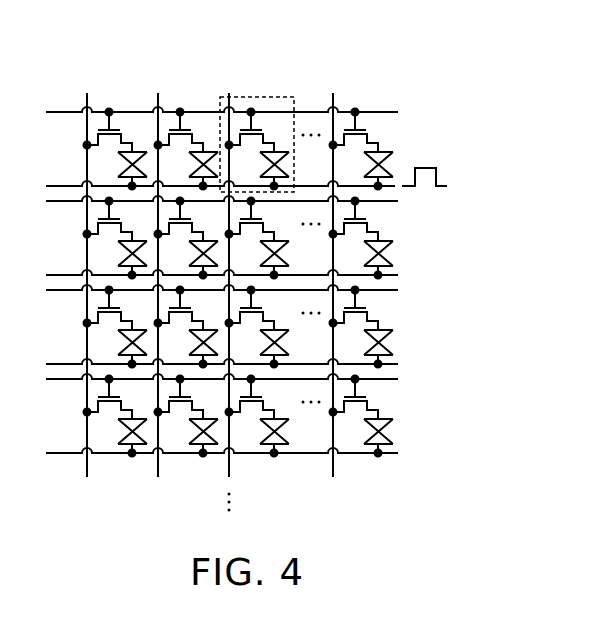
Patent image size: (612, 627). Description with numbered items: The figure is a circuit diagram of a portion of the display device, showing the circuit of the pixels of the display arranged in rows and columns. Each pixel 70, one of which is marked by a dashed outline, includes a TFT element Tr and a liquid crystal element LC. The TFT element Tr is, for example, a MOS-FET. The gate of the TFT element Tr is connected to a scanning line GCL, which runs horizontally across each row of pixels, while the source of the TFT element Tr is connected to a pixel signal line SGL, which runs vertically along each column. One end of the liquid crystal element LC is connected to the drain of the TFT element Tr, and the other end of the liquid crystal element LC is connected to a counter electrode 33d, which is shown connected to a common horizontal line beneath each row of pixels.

The pixel 70 is at (239, 97).
The pixel signal line SGL is at (227, 120).
The TFT element Tr is at (258, 140).
The liquid crystal element LC is at (296, 163).
The scanning line GCL is at (380, 113).
The counter electrode 33d is at (395, 183).